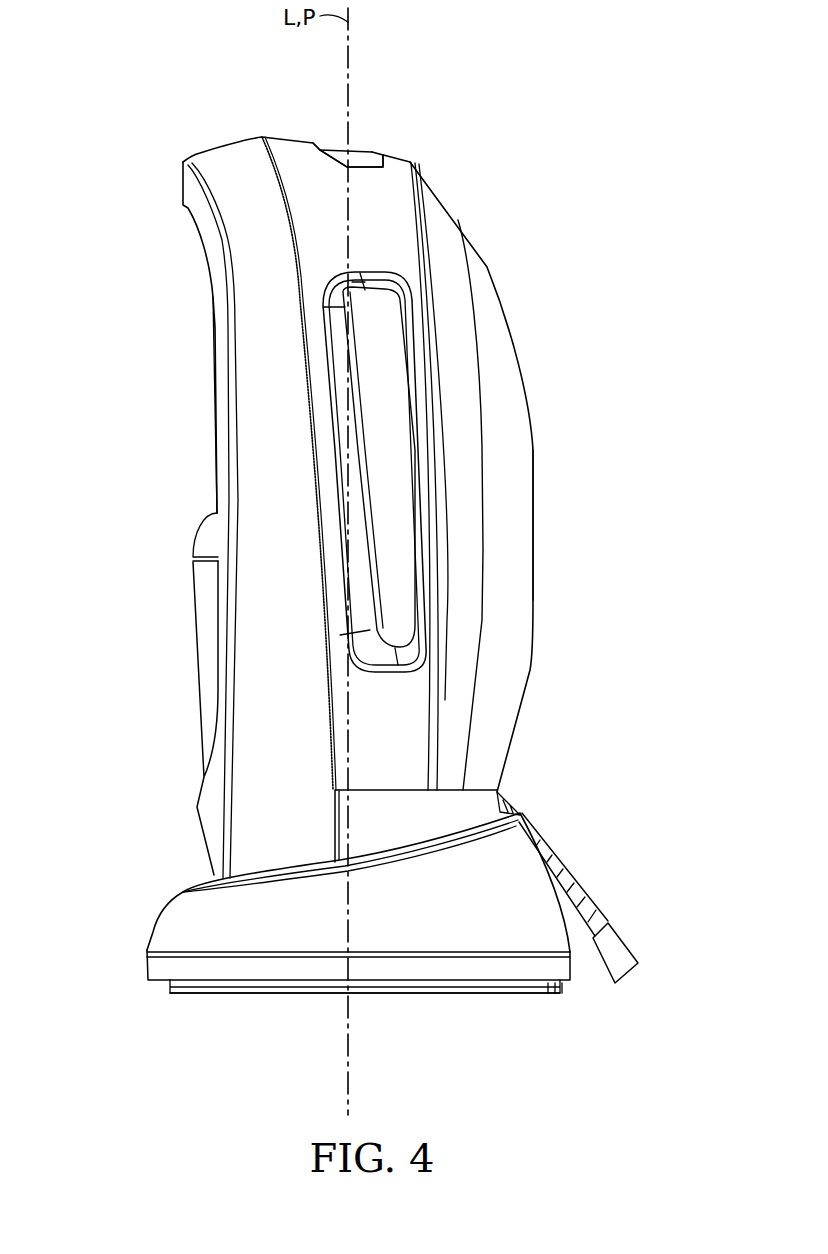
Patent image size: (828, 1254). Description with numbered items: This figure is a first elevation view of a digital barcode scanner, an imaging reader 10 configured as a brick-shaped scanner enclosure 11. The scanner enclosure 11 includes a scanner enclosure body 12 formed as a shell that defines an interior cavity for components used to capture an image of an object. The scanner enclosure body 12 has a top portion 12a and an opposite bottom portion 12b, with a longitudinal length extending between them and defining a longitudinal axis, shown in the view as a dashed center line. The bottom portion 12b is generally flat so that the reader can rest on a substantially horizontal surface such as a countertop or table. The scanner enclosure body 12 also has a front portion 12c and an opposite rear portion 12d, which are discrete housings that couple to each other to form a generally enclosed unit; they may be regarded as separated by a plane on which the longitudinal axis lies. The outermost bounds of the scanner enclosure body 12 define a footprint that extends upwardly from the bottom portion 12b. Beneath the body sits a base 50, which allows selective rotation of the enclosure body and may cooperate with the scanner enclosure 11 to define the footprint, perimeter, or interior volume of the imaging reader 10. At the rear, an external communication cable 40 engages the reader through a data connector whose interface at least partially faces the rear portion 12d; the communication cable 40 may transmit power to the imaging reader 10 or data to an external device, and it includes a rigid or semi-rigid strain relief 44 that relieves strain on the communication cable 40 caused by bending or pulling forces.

The imaging reader 10 is at (148, 802).
The scanner enclosure 11 is at (430, 197).
The scanner enclosure body 12 is at (475, 273).
The top portion 12a is at (313, 132).
The bottom portion 12b is at (297, 998).
The front portion 12c is at (155, 472).
The rear portion 12d is at (561, 508).
The communication cable 40 is at (613, 955).
The strain relief 44 is at (598, 920).
The base 50 is at (208, 931).